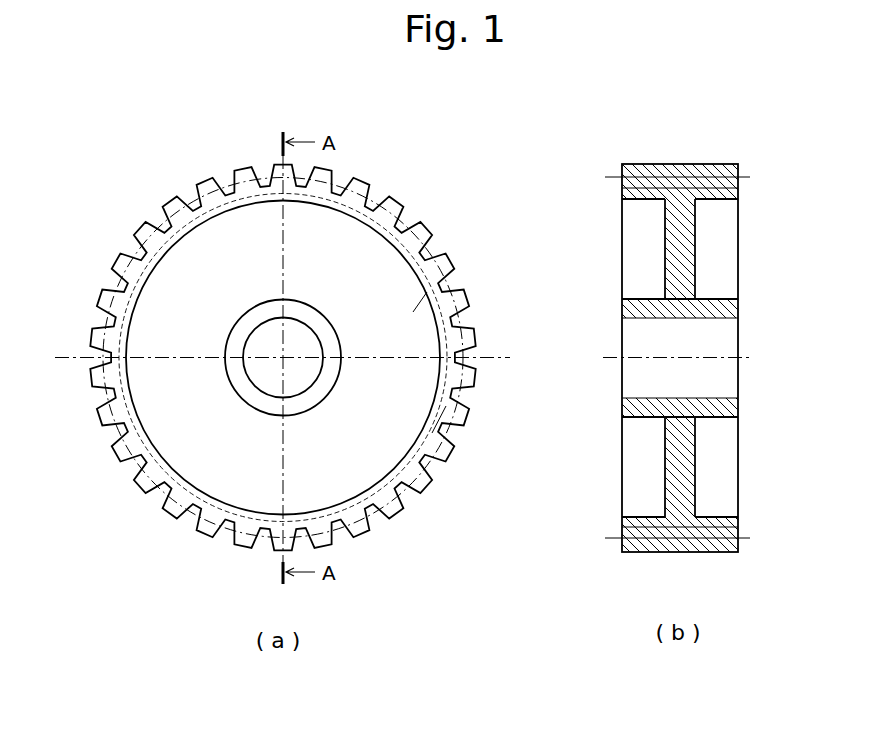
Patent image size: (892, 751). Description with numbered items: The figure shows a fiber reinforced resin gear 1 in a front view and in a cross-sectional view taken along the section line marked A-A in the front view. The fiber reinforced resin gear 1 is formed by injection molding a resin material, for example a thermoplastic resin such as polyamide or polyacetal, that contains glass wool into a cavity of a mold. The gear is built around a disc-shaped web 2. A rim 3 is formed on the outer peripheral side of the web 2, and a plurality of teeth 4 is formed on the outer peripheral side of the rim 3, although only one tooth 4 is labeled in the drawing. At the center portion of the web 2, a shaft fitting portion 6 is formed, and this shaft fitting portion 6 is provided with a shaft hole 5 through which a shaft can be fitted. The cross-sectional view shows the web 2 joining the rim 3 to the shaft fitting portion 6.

The fiber reinforced resin gear 1 is at (412, 202).
The web 2 is at (437, 287).
The rim 3 is at (462, 418).
The teeth 4 is at (270, 169).
The shaft hole 5 is at (318, 369).
The shaft fitting portion 6 is at (315, 405).